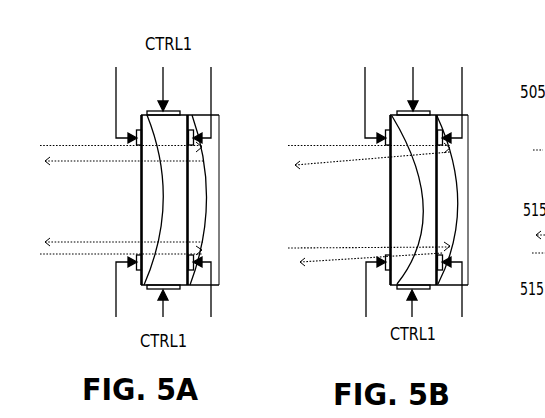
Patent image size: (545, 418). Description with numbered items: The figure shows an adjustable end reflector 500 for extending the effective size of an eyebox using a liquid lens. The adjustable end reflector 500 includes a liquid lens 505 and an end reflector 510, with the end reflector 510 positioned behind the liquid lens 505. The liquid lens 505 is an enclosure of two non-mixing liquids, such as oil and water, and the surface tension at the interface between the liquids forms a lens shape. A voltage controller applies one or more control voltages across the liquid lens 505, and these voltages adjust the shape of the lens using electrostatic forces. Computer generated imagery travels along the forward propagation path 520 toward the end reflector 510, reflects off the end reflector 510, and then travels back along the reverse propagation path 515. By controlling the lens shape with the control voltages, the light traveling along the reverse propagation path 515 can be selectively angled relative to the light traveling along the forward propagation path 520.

In FIG. 5A, the adjustable end reflector 500 is at (252, 60).
In FIG. 5B, the adjustable end reflector 500 is at (503, 60).
In FIG. 5A, the liquid lens 505 is at (91, 124).
In FIG. 5B, the liquid lens 505 is at (346, 127).
In FIG. 5A, the end reflector 510 is at (205, 163).
In FIG. 5B, the end reflector 510 is at (470, 158).
In FIG. 5A, the reverse propagation path 515 is at (107, 162).
In FIG. 5B, the reverse propagation path 515 is at (337, 163).
In FIG. 5A, the forward propagation path 520 is at (107, 253).
In FIG. 5B, the forward propagation path 520 is at (342, 247).